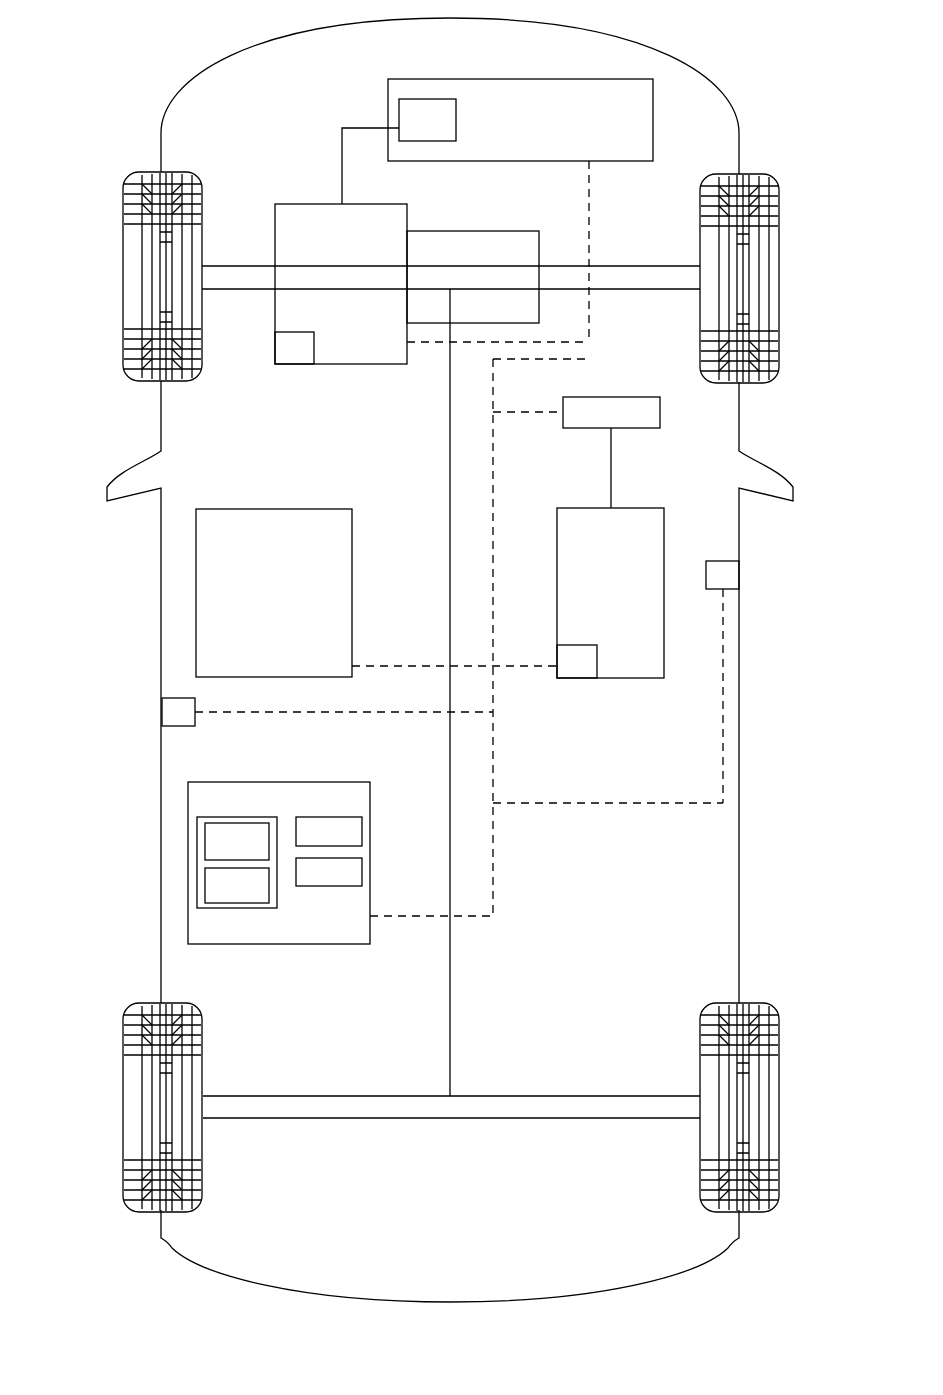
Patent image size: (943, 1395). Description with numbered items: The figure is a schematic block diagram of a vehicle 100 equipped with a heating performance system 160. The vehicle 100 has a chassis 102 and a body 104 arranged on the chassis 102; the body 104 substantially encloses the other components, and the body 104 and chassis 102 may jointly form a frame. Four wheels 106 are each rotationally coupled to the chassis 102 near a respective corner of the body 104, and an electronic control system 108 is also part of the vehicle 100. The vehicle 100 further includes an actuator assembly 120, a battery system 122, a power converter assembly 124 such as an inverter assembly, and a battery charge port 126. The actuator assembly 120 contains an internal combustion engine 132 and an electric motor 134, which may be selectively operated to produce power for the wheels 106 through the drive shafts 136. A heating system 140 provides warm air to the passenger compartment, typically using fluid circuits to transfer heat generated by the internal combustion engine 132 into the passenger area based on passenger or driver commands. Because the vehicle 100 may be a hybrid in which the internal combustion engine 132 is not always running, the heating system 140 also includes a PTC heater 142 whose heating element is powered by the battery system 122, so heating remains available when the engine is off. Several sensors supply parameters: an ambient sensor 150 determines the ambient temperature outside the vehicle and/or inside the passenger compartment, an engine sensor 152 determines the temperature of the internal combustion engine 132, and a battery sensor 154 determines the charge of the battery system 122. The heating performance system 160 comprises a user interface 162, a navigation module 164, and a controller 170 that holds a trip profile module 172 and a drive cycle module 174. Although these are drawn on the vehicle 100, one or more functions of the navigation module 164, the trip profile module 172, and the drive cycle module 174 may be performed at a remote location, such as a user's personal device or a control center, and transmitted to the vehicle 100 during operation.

The vehicle 100 is at (175, 50).
The chassis 102 is at (450, 582).
The body 104 is at (160, 622).
The wheels 106 is at (123, 270).
The electronic control system 108 is at (280, 509).
The actuator assembly 120 is at (422, 383).
The battery system 122 is at (590, 508).
The power converter assembly 124 is at (590, 428).
The battery charge port 126 is at (722, 561).
The internal combustion engine 132 is at (303, 204).
The electric motor 134 is at (455, 231).
The drive shafts 136 is at (248, 266).
The heating system 140 is at (653, 136).
The PTC heater 142 is at (399, 110).
The ambient sensor 150 is at (180, 726).
The engine sensor 152 is at (290, 364).
The battery sensor 154 is at (557, 652).
The heating performance system 160 is at (320, 897).
The user interface 162 is at (362, 828).
The navigation module 164 is at (362, 874).
The controller 170 is at (256, 914).
The trip profile module 172 is at (237, 841).
The drive cycle module 174 is at (237, 885).